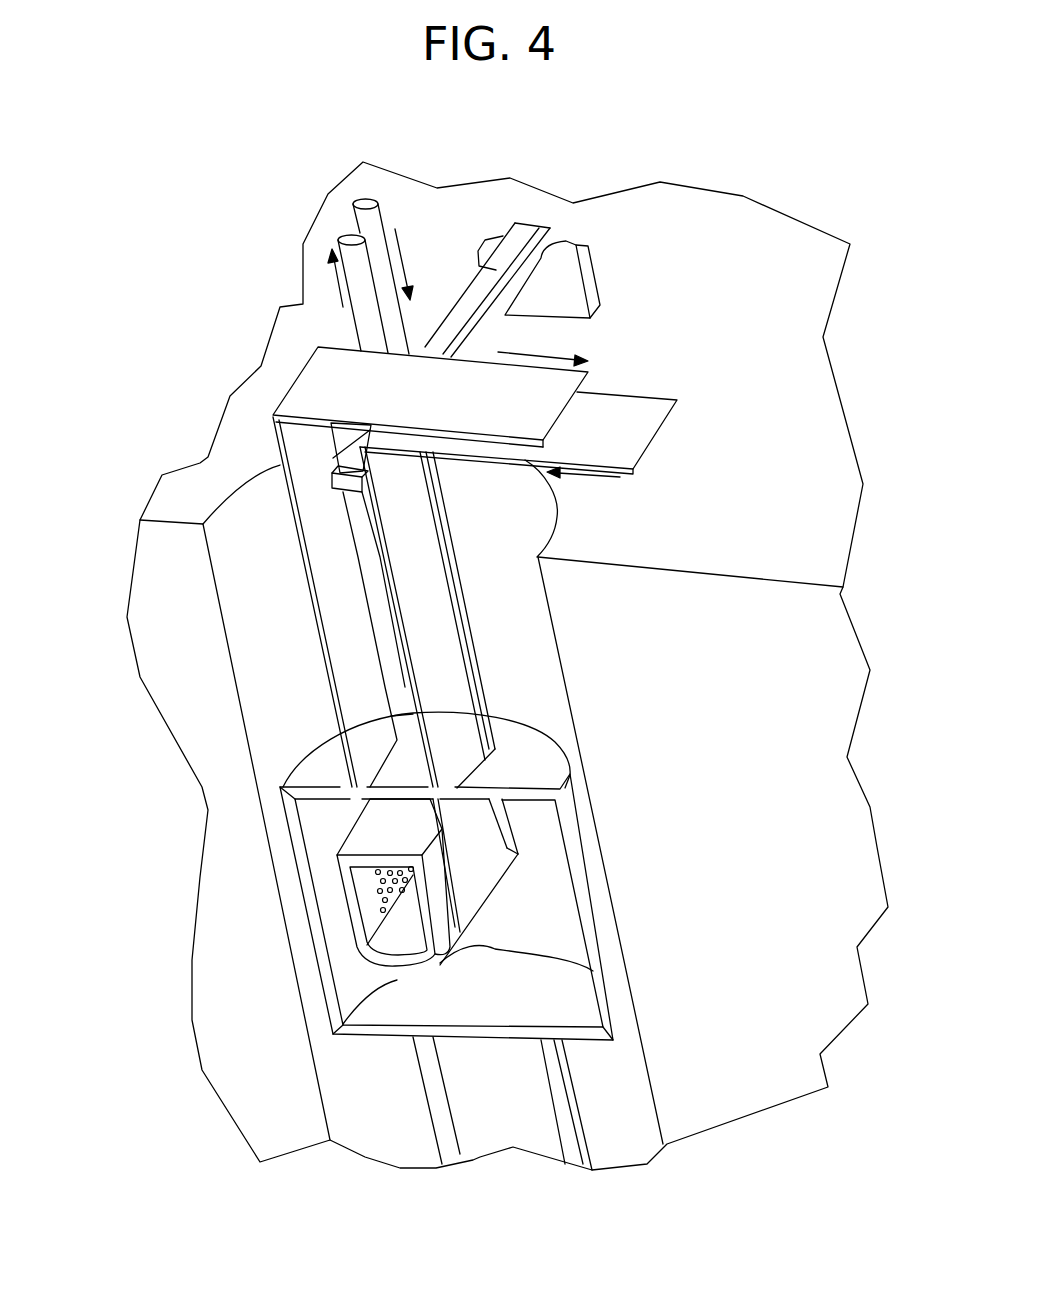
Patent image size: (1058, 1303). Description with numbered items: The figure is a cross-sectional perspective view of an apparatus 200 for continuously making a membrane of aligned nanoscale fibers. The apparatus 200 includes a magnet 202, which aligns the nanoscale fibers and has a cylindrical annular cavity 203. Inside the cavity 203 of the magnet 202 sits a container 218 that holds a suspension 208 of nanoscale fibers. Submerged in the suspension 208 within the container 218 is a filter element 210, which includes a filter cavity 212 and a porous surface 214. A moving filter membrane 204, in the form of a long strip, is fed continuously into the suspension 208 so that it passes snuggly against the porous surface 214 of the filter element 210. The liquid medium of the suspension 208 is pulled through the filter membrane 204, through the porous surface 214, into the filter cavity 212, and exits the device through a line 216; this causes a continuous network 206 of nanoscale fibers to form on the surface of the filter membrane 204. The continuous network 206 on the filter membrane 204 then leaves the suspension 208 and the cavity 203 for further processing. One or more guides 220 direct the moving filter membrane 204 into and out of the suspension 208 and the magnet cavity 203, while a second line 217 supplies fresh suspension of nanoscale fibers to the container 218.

The apparatus 200 is at (852, 340).
The magnet 202 is at (173, 497).
The cylindrical annular cavity 203 is at (258, 615).
The moving filter membrane 204 is at (627, 410).
The continuous network 206 is at (303, 391).
The suspension 208 is at (570, 932).
The filter element 210 is at (353, 845).
The filter cavity 212 is at (400, 962).
The porous surface 214 is at (367, 893).
The line 216 is at (362, 331).
The line 217 is at (397, 328).
The container 218 is at (597, 1047).
The guides 220 is at (573, 293).